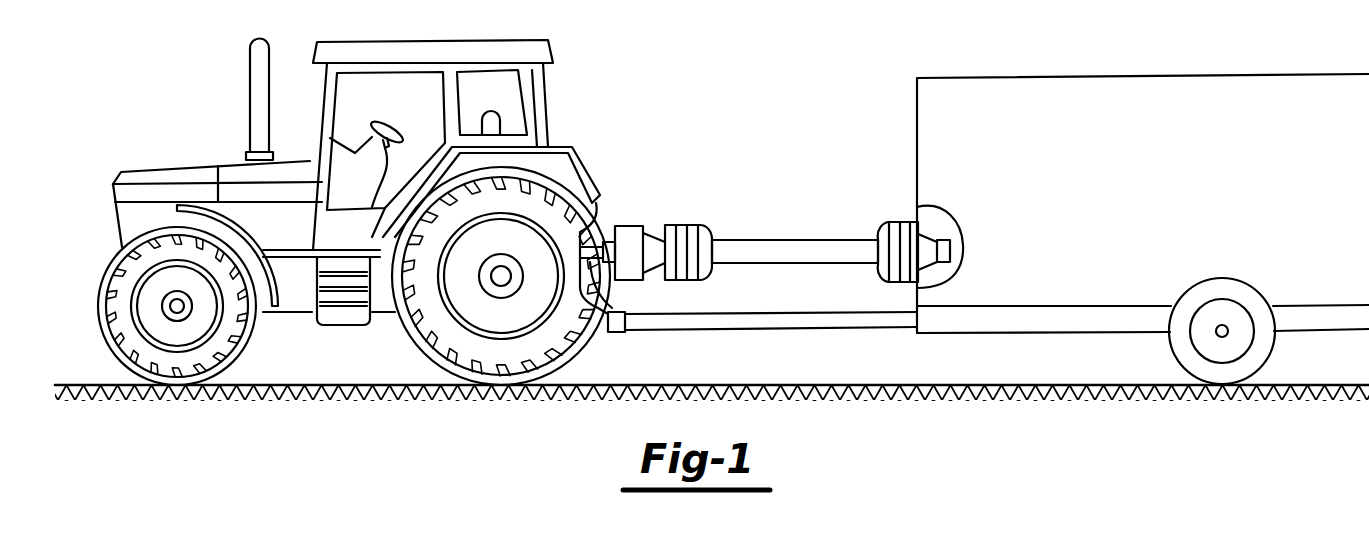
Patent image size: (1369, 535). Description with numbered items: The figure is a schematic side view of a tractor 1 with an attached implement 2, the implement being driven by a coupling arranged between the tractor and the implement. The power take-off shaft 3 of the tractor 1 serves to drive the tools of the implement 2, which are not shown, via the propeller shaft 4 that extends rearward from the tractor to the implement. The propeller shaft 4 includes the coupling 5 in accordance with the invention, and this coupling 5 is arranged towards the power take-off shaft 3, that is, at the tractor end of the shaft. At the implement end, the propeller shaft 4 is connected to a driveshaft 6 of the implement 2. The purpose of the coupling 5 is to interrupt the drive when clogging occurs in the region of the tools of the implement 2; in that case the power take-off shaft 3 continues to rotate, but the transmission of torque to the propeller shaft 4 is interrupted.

The tractor 1 is at (218, 164).
The implement 2 is at (1053, 98).
The power take-off shaft 3 is at (616, 332).
The propeller shaft 4 is at (763, 250).
The coupling 5 is at (633, 227).
The driveshaft 6 is at (974, 280).